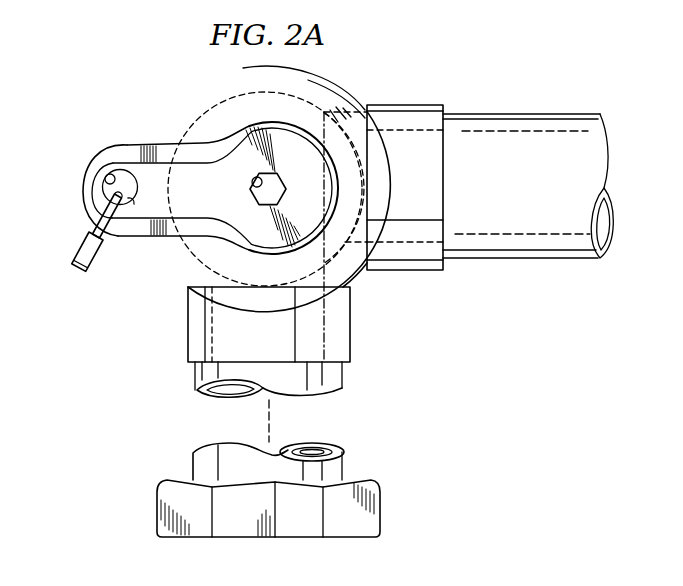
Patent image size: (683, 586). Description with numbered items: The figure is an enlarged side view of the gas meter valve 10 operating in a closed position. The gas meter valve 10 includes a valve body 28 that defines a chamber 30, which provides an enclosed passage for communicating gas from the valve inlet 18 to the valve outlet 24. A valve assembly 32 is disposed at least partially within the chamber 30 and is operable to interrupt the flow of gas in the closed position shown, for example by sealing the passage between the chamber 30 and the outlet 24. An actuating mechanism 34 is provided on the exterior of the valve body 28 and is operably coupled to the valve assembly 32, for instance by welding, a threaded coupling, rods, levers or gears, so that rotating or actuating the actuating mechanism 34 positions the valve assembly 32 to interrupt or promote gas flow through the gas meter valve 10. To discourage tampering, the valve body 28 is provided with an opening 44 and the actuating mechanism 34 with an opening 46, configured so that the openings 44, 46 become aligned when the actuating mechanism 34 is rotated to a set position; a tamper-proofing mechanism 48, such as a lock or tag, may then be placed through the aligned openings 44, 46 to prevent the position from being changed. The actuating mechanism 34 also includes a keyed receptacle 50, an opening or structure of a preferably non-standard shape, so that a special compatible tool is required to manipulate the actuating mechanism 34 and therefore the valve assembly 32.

The gas meter valve 10 is at (197, 76).
The valve inlet 18 is at (186, 350).
The valve outlet 24 is at (430, 105).
The valve body 28 is at (345, 86).
The chamber 30 is at (203, 115).
The valve assembly 32 is at (358, 146).
The actuating mechanism 34 is at (131, 157).
The opening 44 is at (108, 180).
The opening 46 is at (140, 228).
The tamper-proofing mechanism 48 is at (76, 264).
The keyed receptacle 50 is at (252, 188).